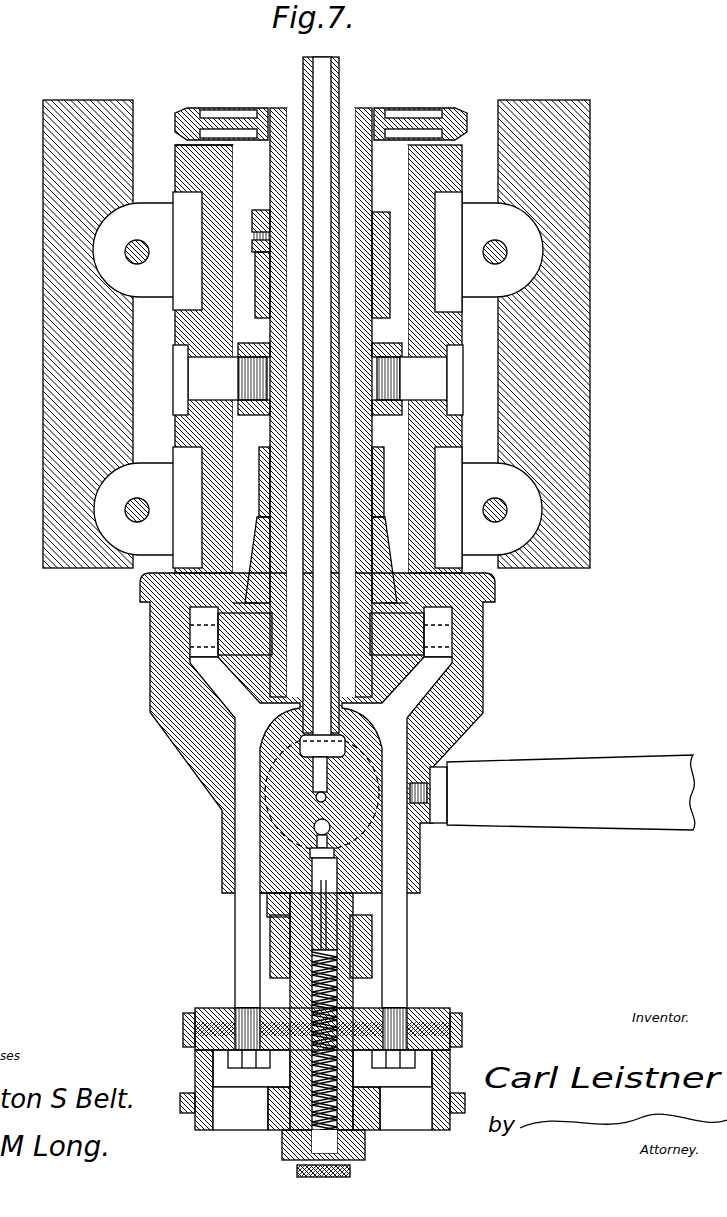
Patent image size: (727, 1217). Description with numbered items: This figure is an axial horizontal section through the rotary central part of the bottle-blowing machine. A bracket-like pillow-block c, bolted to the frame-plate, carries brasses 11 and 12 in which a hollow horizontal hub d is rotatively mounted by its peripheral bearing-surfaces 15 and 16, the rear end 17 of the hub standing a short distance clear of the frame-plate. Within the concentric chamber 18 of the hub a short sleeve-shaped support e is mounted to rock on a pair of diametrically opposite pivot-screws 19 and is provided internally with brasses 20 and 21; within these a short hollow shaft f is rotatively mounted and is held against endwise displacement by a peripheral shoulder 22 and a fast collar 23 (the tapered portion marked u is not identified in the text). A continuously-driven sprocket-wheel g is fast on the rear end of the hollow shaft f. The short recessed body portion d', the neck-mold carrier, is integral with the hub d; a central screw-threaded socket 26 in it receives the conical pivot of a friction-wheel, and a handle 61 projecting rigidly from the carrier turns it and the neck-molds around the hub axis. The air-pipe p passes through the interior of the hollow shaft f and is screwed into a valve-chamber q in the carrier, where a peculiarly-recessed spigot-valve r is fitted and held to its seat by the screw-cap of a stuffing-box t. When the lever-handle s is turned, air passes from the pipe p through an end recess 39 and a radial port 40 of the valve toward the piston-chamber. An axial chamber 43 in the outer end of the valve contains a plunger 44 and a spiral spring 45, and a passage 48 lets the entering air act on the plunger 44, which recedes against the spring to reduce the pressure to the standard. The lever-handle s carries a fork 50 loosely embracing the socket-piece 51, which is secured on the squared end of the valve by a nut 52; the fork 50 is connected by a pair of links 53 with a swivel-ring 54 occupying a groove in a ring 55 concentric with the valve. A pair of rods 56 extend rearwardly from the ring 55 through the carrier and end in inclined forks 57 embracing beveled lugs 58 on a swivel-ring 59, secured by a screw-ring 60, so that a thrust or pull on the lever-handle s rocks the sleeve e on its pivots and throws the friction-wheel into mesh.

The pillow-block c is at (363, 608).
The peripheral bearing-surface 16 is at (208, 240).
The peripheral bearing-surface 15 is at (215, 496).
The hollow horizontal hub d is at (363, 608).
The rear end of the hub 17 is at (178, 147).
The brass 12 is at (196, 268).
The brass 11 is at (196, 527).
The concentric chamber 18 is at (251, 374).
The sleeve-shaped support e is at (363, 608).
The fast collar 23 is at (262, 212).
The brass 21 is at (262, 285).
The brass 20 is at (262, 478).
The peripheral shoulder 22 is at (363, 608).
The tapered portion u is at (363, 608).
The pivot-screw 19 is at (363, 608).
The neck-mold carrier d' is at (363, 608).
The inclined fork 57 is at (195, 620).
The beveled lug 58 is at (321, 634).
The end recess 39 is at (268, 771).
The radial port 40 is at (328, 796).
The swivel-ring 59 is at (245, 611).
The screw-ring 60 is at (400, 611).
The hollow shaft f is at (372, 183).
The sprocket-wheel g is at (175, 122).
The air-pipe p is at (303, 85).
The valve-chamber q is at (322, 746).
The passage 48 is at (314, 829).
The axial chamber 43 is at (357, 878).
The plunger 44 is at (268, 872).
The screw-threaded socket 26 is at (412, 845).
The handle 61 is at (571, 792).
The spigot-valve r is at (296, 994).
The spiral spring 45 is at (350, 998).
The stuffing-box t is at (372, 925).
The rod 56 is at (321, 972).
The lever-handle s is at (355, 1072).
The swivel-ring 54 is at (230, 1008).
The ring 55 is at (422, 1008).
The link 53 is at (363, 608).
The fork 50 is at (222, 1108).
The socket-piece 51 is at (378, 1108).
The nut 52 is at (368, 1150).